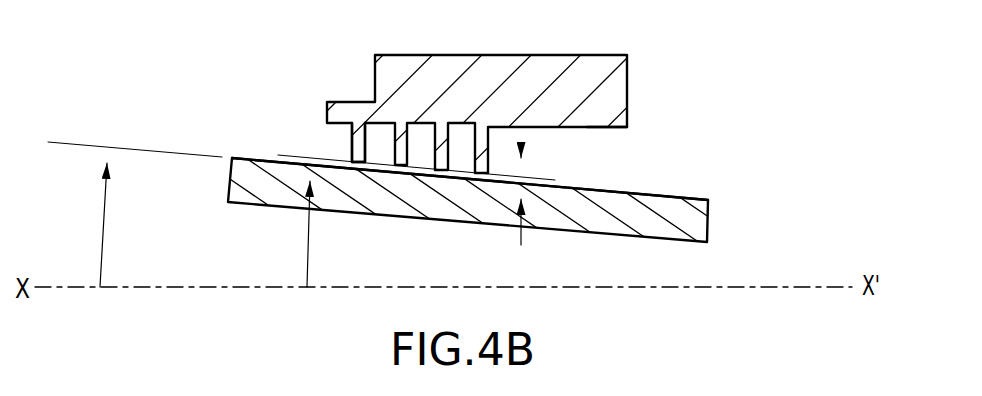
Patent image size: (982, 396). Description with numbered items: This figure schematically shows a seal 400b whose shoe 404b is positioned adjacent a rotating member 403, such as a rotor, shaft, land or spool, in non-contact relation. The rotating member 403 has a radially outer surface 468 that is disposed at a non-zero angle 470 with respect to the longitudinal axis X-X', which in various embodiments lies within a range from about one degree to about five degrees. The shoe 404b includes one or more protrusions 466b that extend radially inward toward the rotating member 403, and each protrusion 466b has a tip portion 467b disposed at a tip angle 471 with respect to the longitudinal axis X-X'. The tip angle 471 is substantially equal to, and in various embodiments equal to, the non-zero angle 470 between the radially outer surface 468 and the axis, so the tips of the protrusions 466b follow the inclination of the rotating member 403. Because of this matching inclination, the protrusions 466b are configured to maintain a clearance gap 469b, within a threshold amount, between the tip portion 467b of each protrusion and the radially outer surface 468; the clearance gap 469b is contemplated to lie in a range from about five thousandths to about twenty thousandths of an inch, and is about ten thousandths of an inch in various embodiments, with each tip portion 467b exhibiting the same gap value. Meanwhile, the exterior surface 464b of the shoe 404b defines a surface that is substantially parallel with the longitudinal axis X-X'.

The seal 400b is at (196, 58).
The shoe 404b is at (617, 82).
The exterior surface 464b is at (587, 128).
The protrusions 466b is at (353, 138).
The tip portion 467b is at (353, 160).
The clearance gap 469b is at (522, 148).
The rotating member 403 is at (708, 222).
The radially outer surface 468 is at (660, 195).
The non-zero angle 470 is at (101, 235).
The tip angle 471 is at (308, 240).